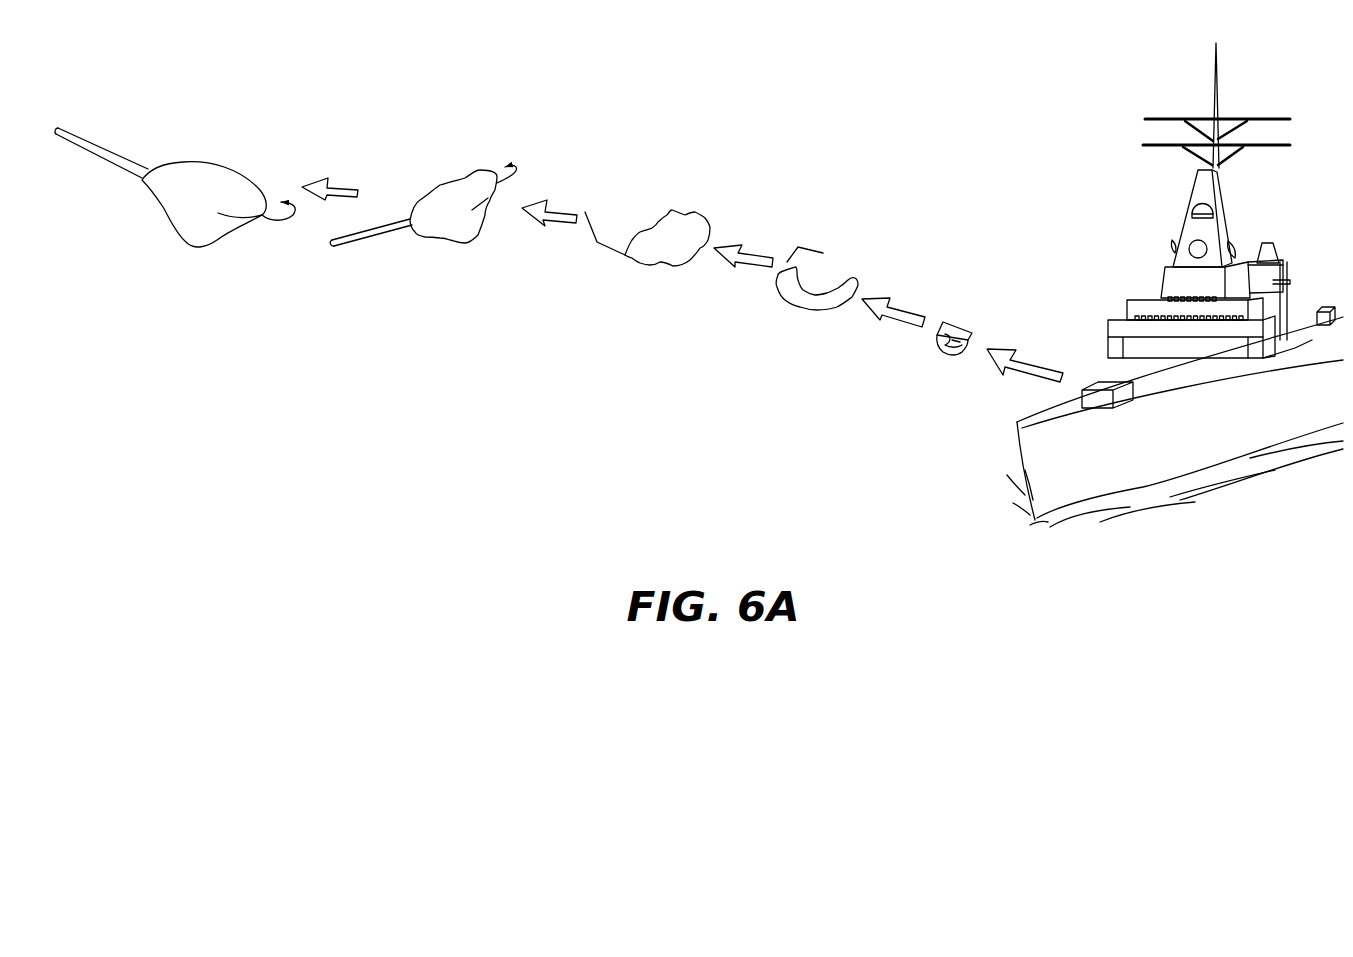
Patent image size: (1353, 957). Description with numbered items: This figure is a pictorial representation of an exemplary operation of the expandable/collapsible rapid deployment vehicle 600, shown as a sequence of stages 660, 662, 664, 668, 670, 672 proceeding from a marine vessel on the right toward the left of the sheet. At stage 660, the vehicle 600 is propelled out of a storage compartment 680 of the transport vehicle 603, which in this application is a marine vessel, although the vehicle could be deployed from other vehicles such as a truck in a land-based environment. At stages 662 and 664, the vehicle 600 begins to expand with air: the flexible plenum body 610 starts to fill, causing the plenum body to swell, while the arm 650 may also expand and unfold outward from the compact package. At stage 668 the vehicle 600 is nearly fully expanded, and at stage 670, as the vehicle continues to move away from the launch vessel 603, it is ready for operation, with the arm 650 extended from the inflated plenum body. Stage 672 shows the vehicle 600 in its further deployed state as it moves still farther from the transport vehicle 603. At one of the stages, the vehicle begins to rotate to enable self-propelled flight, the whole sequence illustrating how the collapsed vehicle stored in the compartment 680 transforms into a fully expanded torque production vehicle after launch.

The rapid deployment vehicle 600 is at (527, 259).
The transport vehicle 603 is at (1175, 285).
The flexible plenum body 610 is at (810, 310).
The arm 650 is at (823, 253).
The stage 660 is at (1098, 338).
The stage 662 is at (950, 310).
The stage 664 is at (819, 238).
The stage 668 is at (676, 200).
The stage 670 is at (465, 163).
The stage 672 is at (198, 150).
The storage compartment 680 is at (1097, 381).